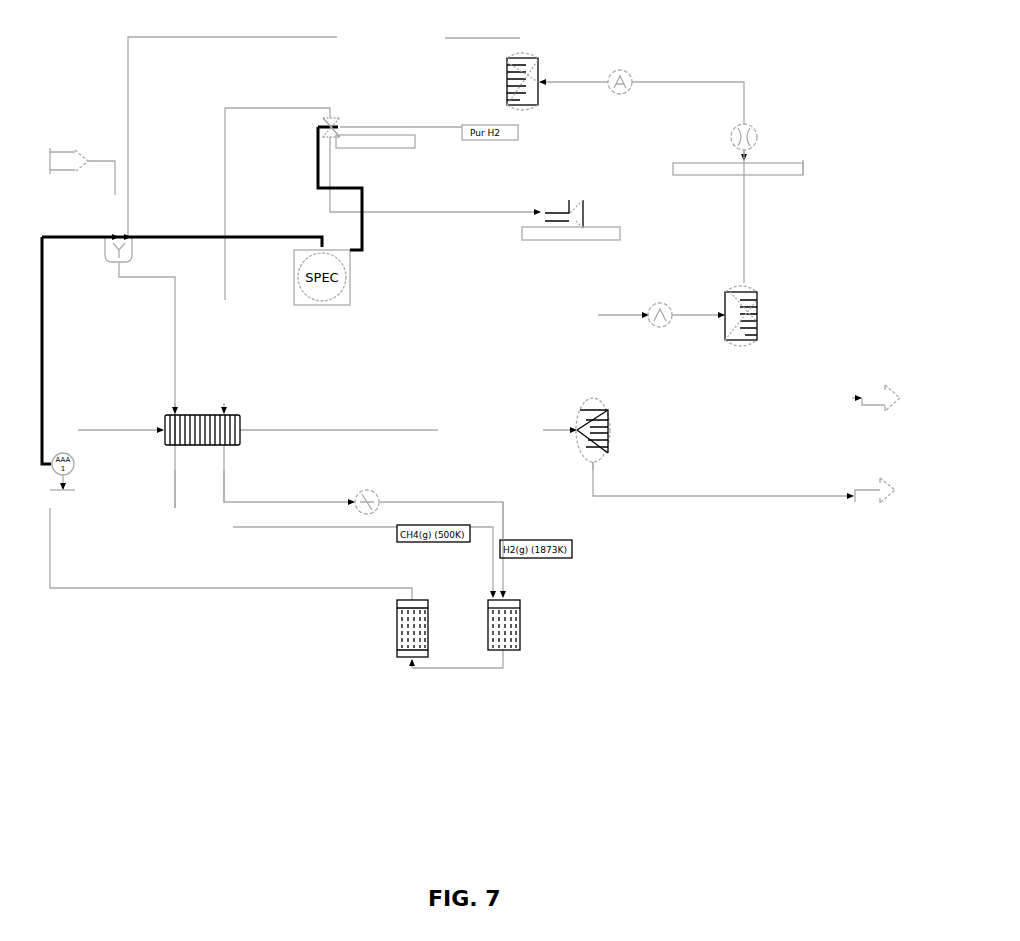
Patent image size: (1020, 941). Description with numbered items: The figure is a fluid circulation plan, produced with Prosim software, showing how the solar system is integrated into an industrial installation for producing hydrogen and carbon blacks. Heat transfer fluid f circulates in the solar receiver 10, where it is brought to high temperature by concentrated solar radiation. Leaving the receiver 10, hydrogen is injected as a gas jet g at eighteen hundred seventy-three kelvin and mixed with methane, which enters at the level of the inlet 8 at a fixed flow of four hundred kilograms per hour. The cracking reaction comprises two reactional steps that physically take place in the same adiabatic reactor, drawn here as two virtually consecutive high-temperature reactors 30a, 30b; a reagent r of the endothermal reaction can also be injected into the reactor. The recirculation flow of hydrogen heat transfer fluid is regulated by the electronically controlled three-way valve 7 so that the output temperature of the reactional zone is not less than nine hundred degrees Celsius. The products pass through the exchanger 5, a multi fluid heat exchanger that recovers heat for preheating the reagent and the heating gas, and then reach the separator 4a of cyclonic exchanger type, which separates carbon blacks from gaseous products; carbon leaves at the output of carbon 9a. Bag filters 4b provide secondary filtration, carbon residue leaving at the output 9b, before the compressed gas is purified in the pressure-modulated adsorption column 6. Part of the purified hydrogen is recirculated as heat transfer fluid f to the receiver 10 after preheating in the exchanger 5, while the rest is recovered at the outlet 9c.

The inlet 8 is at (62, 150).
The electronically controlled 3-way valve 7 is at (344, 107).
The pressure-modulated adsorption column 6 is at (546, 62).
The outlet 9c is at (573, 191).
The bag filters 4b is at (763, 292).
The output of carbon residue 9b is at (869, 380).
The exchanger 5 is at (159, 412).
The solar receiver 10 is at (371, 481).
The separator 4a is at (577, 412).
The output of carbon 9a is at (867, 508).
The gas jet g is at (512, 514).
The reagent r is at (189, 535).
The heat transfer fluid f is at (231, 507).
The high-temperature reactor 30b is at (397, 647).
The high-temperature reactor 30a is at (521, 646).